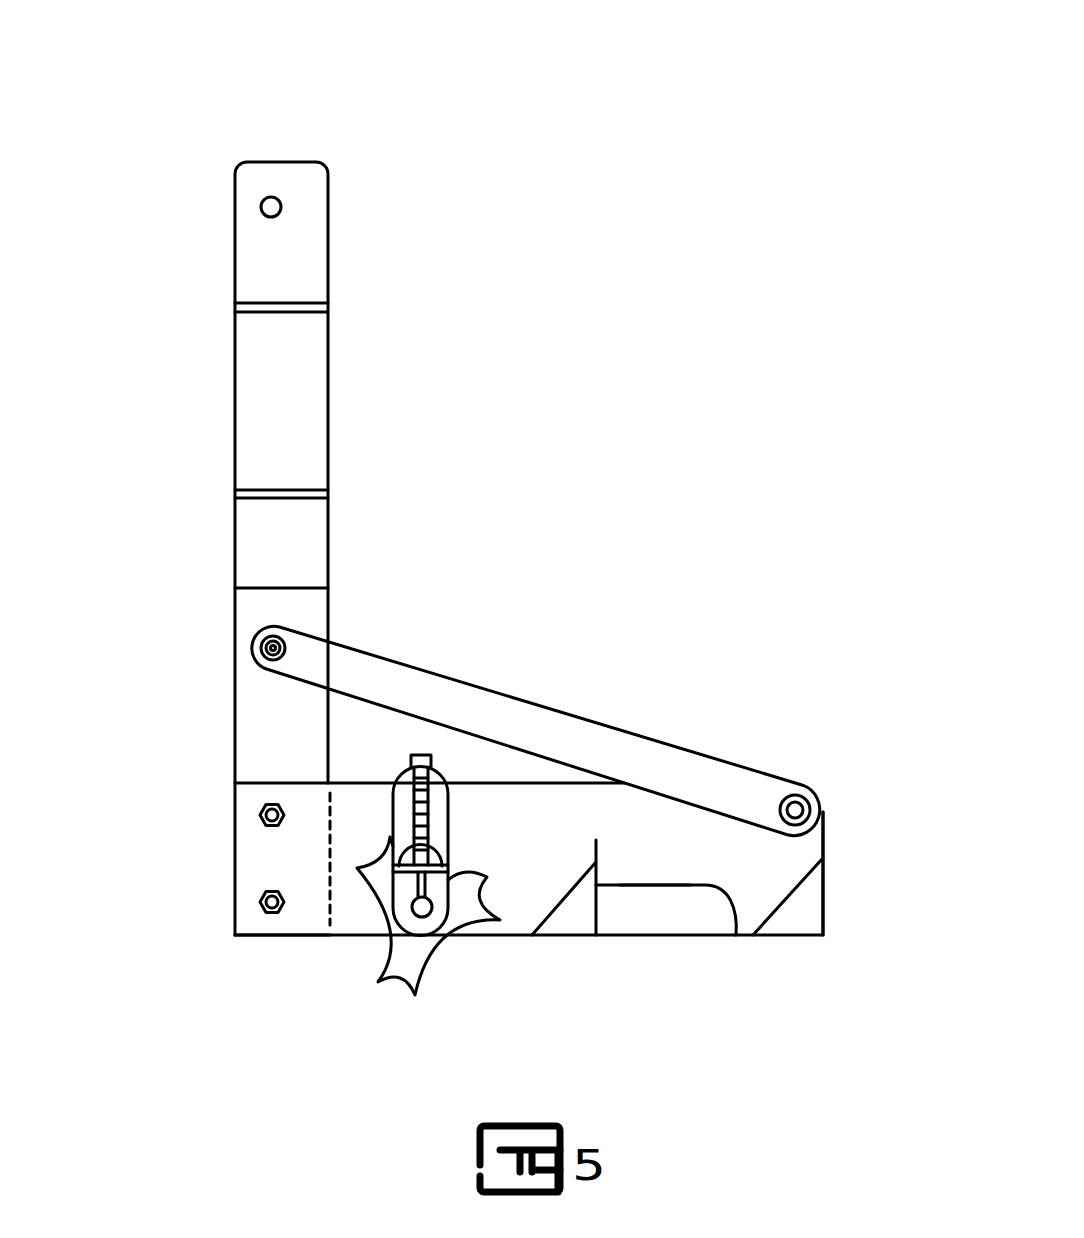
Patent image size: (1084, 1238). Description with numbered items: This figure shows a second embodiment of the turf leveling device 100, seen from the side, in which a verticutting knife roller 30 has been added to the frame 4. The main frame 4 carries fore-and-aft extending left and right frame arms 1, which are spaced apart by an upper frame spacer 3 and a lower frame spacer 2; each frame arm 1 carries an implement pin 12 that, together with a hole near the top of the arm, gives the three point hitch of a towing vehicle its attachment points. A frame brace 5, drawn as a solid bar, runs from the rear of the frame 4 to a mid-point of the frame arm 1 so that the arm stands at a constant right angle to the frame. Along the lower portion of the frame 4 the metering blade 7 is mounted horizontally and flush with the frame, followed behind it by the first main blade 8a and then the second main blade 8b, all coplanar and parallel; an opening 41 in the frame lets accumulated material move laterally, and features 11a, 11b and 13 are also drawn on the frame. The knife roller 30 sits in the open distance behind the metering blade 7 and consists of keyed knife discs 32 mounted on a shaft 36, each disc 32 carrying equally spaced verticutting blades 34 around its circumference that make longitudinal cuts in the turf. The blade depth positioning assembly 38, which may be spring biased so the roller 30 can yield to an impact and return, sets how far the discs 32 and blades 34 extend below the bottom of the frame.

The turf leveling device 100 is at (215, 100).
The frame arm 1 is at (292, 235).
The lower frame spacer 2 is at (293, 492).
The upper frame spacer 3 is at (293, 312).
The frame 4 is at (600, 822).
The frame brace 5 is at (398, 685).
The metering blade 7 is at (290, 940).
The first main blade 8a is at (542, 935).
The second main blade 8b is at (807, 935).
The first stop 11a is at (568, 936).
The second stop 11b is at (793, 892).
The implement pin 12 is at (288, 633).
The fastener 13 is at (260, 812).
The verticutting knife roller 30 is at (305, 862).
The keyed knife disc 32 is at (408, 967).
The verticutting blade 34 is at (403, 978).
The shaft 36 is at (428, 922).
The blade depth positioning assembly 38 is at (420, 817).
The opening 41 is at (653, 885).